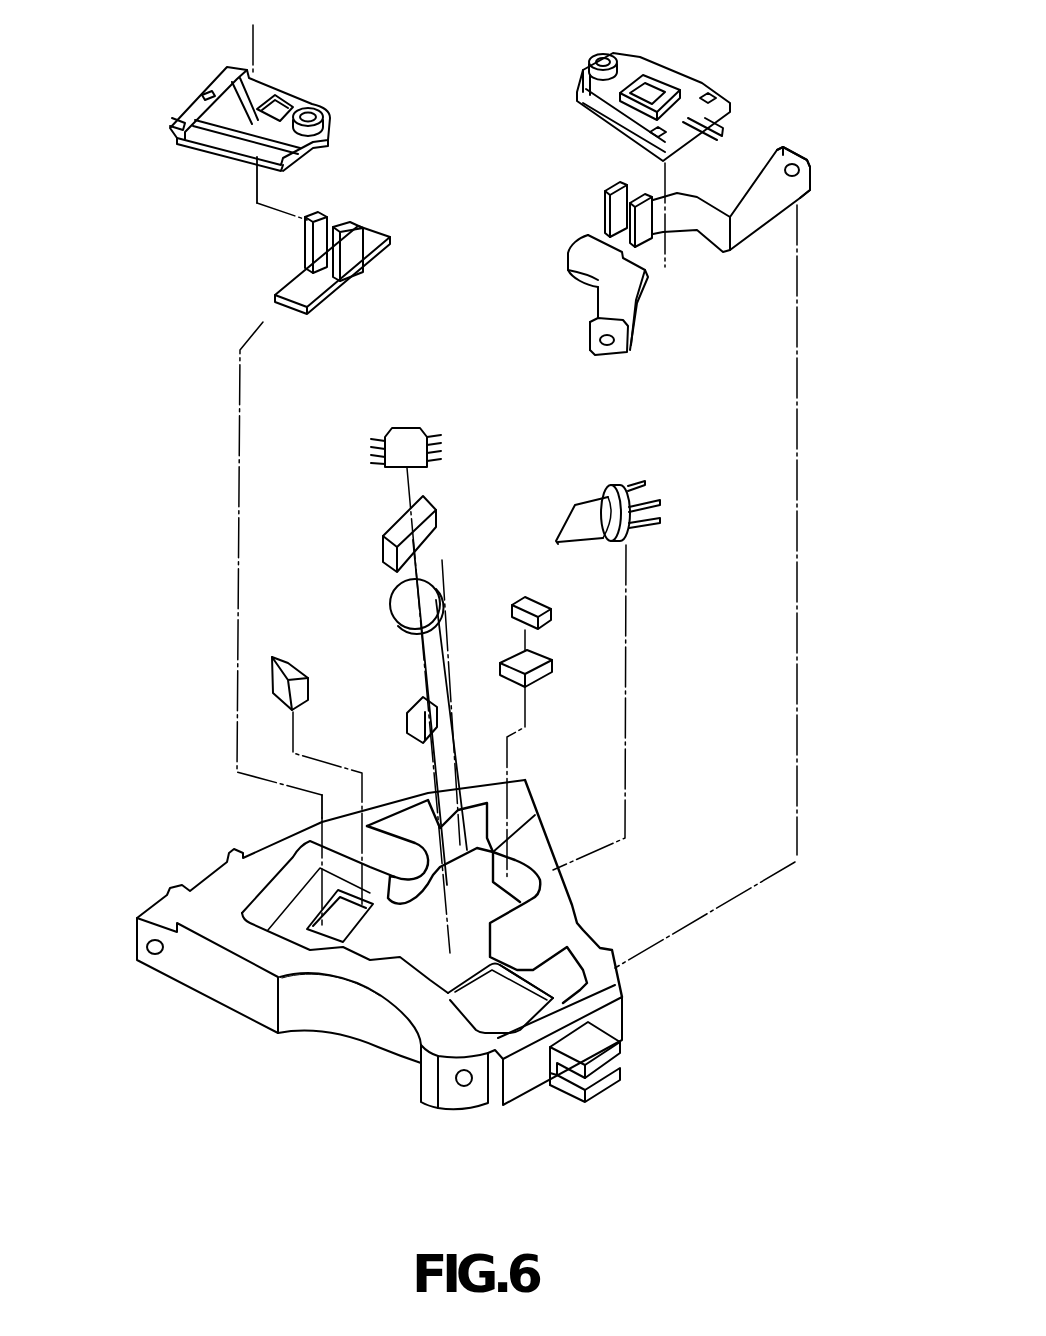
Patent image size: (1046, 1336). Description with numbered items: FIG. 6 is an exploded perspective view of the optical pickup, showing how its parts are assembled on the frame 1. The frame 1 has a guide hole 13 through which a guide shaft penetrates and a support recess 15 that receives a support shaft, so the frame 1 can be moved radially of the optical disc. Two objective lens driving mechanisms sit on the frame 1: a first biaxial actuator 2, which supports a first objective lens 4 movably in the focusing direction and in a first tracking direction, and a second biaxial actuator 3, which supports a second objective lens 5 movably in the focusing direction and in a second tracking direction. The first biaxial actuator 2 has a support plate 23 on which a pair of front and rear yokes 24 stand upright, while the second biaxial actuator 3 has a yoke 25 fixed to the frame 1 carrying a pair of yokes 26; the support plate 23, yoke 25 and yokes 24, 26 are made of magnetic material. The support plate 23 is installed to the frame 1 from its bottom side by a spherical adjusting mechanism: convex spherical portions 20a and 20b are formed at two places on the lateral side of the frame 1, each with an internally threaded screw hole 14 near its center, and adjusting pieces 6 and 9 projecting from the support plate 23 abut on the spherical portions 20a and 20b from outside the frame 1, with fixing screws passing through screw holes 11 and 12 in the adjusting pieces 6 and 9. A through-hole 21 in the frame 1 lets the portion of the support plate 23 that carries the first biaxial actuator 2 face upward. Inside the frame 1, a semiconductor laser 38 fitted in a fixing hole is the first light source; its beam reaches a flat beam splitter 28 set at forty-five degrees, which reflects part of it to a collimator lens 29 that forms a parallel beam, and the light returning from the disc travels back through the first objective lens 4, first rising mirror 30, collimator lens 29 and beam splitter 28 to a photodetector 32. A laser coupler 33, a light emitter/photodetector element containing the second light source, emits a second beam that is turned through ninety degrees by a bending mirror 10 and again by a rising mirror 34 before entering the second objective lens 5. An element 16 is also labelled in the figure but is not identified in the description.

The frame 1 is at (243, 1002).
The first biaxial actuator 2 is at (705, 73).
The second biaxial actuator 3 is at (311, 85).
The first objective lens 4 is at (592, 60).
The second objective lens 5 is at (324, 112).
The adjusting piece 6 is at (598, 332).
The adjusting piece 9 is at (801, 152).
The bending mirror 10 is at (538, 665).
The screw hole 11 is at (610, 352).
The screw hole 12 is at (800, 170).
The guide hole 13 is at (153, 954).
The internally threaded screw hole 14 is at (465, 1087).
The support recess 15 is at (607, 1076).
The arcuate cutout 16 is at (373, 1030).
The convex spherical portion 20a is at (452, 1092).
The convex spherical portion 20b is at (585, 905).
The through-hole 21 is at (541, 988).
The support plate 23 is at (701, 207).
The yokes 24 is at (646, 196).
The yoke 25 is at (313, 283).
The yokes 26 is at (325, 220).
The flat beam splitter 28 is at (423, 510).
The collimator lens 29 is at (432, 600).
The first rising mirror 30 is at (418, 718).
The photodetector 32 is at (405, 440).
The laser coupler 33 is at (540, 608).
The rising mirror 34 is at (290, 660).
The semiconductor laser 38 is at (611, 486).